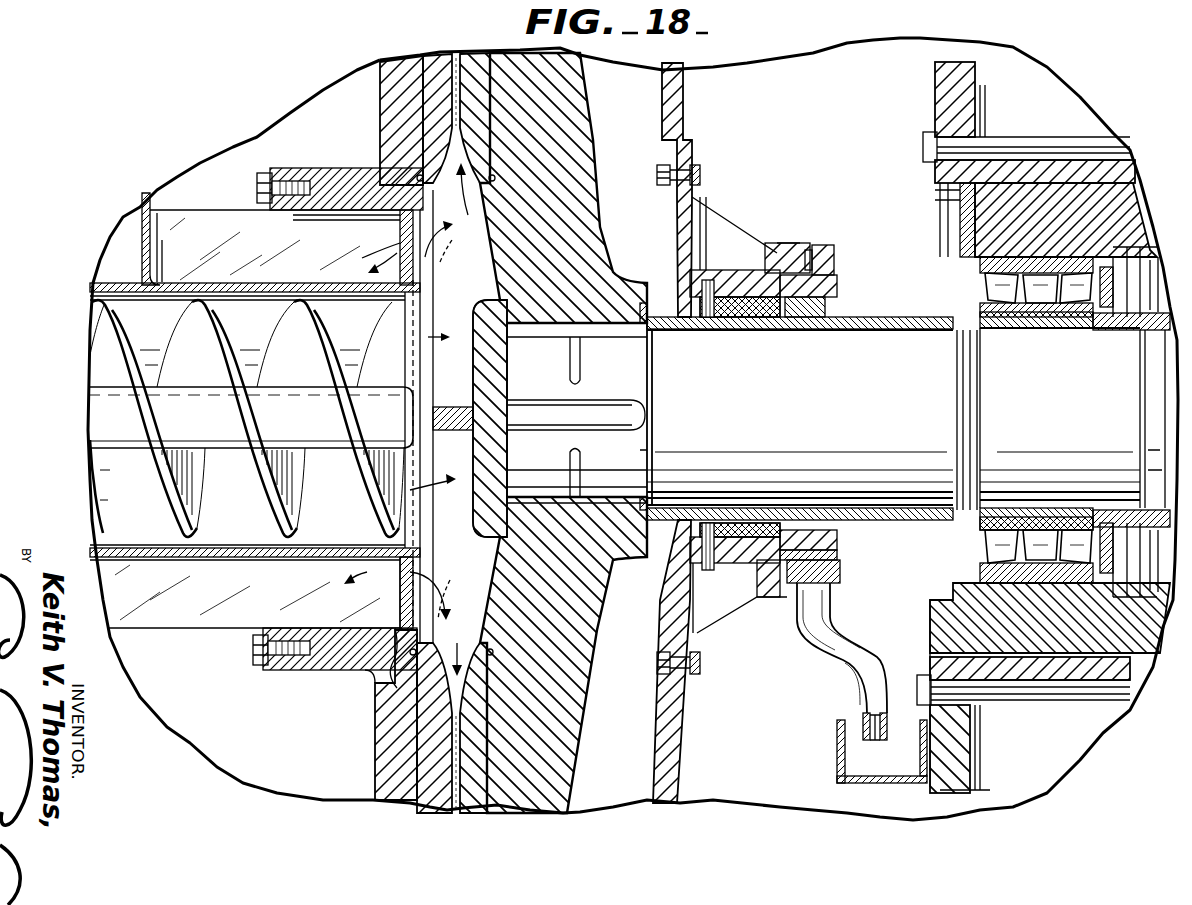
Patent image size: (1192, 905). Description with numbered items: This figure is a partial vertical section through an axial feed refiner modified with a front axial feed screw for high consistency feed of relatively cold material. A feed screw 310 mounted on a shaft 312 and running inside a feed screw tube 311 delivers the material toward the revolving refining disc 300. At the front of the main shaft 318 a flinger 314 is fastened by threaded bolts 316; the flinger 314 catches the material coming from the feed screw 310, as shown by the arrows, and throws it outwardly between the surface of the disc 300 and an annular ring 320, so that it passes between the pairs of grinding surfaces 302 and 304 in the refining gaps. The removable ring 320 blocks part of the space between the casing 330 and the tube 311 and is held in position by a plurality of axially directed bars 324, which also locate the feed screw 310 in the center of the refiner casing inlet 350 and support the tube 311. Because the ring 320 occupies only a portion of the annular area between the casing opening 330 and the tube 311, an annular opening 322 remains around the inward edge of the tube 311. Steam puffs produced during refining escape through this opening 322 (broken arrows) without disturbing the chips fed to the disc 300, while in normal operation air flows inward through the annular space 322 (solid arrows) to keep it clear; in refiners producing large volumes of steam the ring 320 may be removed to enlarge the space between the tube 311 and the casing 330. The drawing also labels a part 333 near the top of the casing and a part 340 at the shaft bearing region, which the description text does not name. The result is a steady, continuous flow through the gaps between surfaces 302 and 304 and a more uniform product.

The refining disc 300 is at (565, 682).
The grinding surface 302 is at (477, 742).
The grinding surface 304 is at (422, 756).
The feed screw 310 is at (100, 474).
The feed screw tube 311 is at (213, 550).
The shaft 312 is at (100, 416).
The flinger 314 is at (455, 377).
The threaded bolts 316 is at (522, 473).
The shaft 318 is at (908, 421).
The removable ring 320 is at (398, 598).
The annular opening 322 is at (413, 568).
The axially directed bars 324 is at (203, 612).
The casing 330 is at (402, 102).
The nozzle slot 333 is at (455, 66).
The bearing 340 is at (990, 275).
The refiner casing inlet 350 is at (375, 685).